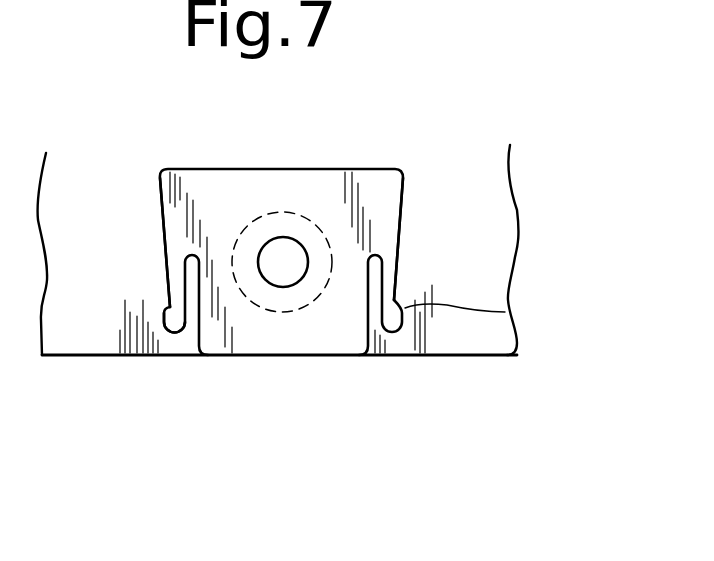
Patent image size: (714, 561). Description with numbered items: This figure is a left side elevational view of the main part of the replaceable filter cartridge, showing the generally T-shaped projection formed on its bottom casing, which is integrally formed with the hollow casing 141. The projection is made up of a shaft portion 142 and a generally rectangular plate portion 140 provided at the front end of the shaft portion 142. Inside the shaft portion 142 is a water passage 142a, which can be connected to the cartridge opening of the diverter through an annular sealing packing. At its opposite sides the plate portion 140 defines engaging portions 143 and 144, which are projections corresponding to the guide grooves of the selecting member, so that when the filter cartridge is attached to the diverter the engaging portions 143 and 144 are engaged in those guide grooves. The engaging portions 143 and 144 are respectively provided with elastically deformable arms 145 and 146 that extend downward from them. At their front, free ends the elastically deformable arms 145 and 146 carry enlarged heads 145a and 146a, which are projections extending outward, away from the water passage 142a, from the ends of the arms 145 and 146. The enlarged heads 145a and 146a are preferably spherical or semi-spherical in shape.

The plate portion 140 is at (305, 181).
The hollow casing 141 is at (502, 235).
The shaft portion 142 is at (253, 300).
The water passage 142a is at (285, 277).
The engaging portion 143 is at (160, 186).
The engaging portion 144 is at (393, 181).
The elastically deformable arm 145 is at (173, 332).
The enlarged head 145a is at (165, 308).
The elastically deformable arm 146 is at (400, 333).
The enlarged head 146a is at (505, 312).